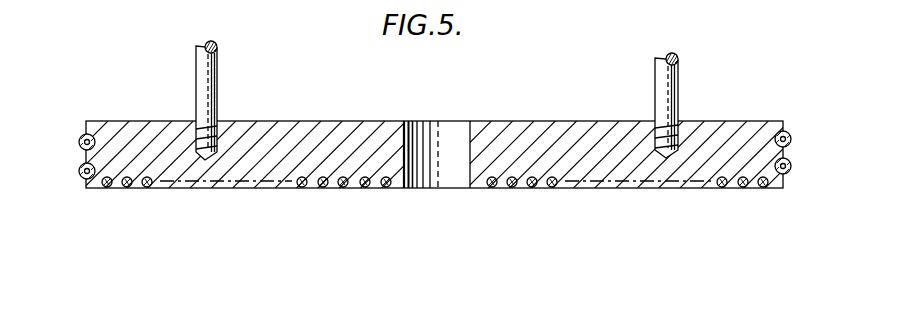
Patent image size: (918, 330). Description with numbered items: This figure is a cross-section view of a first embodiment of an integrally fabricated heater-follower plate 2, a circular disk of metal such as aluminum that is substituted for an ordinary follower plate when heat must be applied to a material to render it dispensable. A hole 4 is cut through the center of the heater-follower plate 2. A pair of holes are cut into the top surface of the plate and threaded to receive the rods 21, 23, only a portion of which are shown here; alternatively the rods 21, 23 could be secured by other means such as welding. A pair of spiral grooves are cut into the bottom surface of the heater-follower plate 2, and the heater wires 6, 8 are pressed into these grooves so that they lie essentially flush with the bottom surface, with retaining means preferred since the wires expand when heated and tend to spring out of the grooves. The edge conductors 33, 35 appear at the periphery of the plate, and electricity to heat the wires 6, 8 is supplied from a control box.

The integrally fabricated heater-follower plate 2 is at (291, 121).
The hole 4 is at (447, 121).
The heater wire 6 is at (364, 189).
The heater wire 8 is at (386, 189).
The rod 21 is at (196, 86).
The rod 23 is at (678, 100).
The edge conductor 33 is at (78, 141).
The edge conductor 35 is at (78, 171).